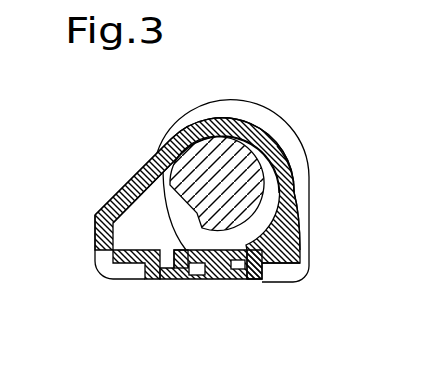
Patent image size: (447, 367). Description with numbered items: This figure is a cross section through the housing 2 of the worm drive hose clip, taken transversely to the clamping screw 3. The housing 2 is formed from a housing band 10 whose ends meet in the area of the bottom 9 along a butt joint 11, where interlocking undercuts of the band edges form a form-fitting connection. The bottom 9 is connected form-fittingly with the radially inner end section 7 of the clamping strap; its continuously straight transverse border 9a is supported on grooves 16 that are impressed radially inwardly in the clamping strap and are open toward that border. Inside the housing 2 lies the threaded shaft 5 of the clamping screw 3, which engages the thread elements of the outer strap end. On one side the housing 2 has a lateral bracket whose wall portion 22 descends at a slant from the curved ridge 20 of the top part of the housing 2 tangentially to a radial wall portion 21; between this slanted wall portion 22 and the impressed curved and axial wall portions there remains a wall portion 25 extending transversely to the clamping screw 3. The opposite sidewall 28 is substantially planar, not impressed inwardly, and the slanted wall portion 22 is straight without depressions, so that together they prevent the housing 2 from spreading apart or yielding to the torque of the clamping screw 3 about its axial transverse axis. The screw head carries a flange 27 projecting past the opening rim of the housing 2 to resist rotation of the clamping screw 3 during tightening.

The housing 2 is at (312, 143).
The clamping screw 3 is at (278, 113).
The threaded shaft 5 is at (250, 203).
The radially inner end section 7 is at (278, 268).
The bottom 9 is at (192, 280).
The transverse border 9a is at (133, 272).
The housing band 10 is at (172, 155).
The butt joint 11 is at (205, 277).
The grooves 16 is at (163, 280).
The curved ridge 20 is at (236, 124).
The radial wall portion 21 is at (99, 240).
The slantedly descending wall portion 22 is at (148, 207).
The transversely extending wall portion 25 is at (118, 200).
The flange 27 is at (281, 143).
The sidewall 28 is at (300, 182).